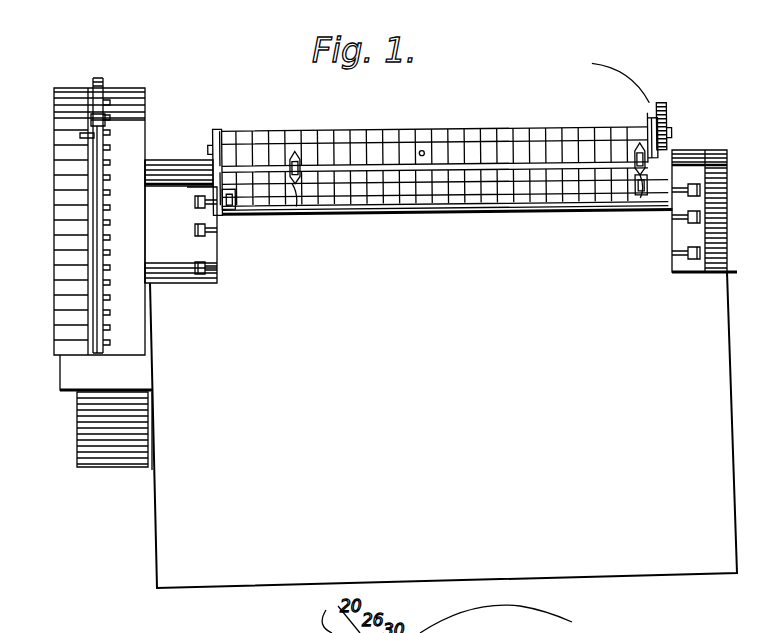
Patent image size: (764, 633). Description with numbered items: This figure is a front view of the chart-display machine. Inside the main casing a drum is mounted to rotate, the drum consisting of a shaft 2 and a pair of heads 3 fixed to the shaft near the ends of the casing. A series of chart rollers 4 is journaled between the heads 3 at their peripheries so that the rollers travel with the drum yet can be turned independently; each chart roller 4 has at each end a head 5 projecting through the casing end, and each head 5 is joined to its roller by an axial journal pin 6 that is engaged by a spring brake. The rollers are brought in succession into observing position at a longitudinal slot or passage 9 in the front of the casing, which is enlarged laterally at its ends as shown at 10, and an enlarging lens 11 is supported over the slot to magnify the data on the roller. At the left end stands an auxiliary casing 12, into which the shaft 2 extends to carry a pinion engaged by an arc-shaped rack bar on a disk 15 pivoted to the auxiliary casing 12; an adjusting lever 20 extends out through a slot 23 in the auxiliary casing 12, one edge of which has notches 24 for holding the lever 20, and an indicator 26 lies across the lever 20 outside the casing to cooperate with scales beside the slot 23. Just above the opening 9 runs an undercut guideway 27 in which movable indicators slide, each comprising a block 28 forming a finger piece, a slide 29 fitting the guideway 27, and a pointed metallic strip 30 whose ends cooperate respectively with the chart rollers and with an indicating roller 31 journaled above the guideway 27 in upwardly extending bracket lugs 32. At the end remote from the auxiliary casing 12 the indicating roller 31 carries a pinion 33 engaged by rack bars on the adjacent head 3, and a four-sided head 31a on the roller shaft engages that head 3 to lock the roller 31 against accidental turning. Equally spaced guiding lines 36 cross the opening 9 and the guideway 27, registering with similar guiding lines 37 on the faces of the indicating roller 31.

The shaft 2 is at (395, 82).
The heads 3 is at (118, 54).
The chart rollers 4 is at (697, 632).
The head 5 is at (192, 230).
The axial journal pin 6 is at (215, 270).
The slot or passage 9 is at (585, 197).
The lateral enlargement of slot 10 is at (232, 208).
The enlarging lens 11 is at (355, 214).
The auxiliary casing 12 is at (52, 100).
The disk 15 is at (77, 430).
The vertical shaft 20 is at (96, 82).
The slot 23 is at (90, 118).
The notches 24 is at (112, 348).
The indicator 26 is at (82, 137).
The undercut guideway 27 is at (545, 165).
The block 28 is at (300, 160).
The slide 29 is at (280, 168).
The metallic strip 30 is at (298, 186).
The indicating roller 31 is at (512, 130).
The head 31a is at (610, 77).
The bracket lugs 32 is at (218, 130).
The pinion 33 is at (661, 104).
The guiding lines 36 is at (448, 175).
The guiding lines 37 is at (440, 136).